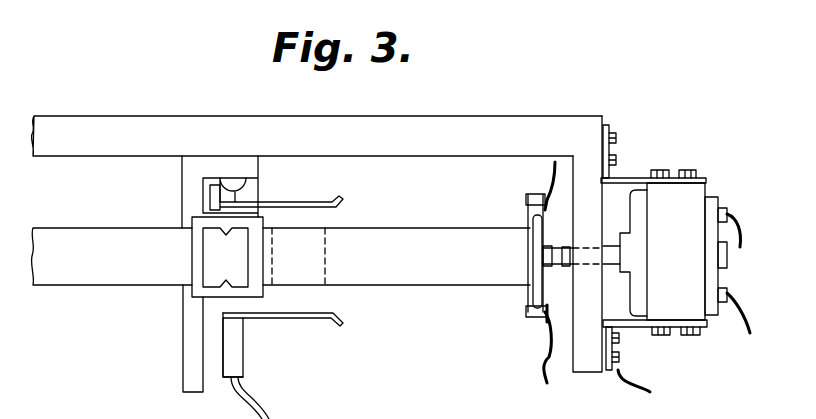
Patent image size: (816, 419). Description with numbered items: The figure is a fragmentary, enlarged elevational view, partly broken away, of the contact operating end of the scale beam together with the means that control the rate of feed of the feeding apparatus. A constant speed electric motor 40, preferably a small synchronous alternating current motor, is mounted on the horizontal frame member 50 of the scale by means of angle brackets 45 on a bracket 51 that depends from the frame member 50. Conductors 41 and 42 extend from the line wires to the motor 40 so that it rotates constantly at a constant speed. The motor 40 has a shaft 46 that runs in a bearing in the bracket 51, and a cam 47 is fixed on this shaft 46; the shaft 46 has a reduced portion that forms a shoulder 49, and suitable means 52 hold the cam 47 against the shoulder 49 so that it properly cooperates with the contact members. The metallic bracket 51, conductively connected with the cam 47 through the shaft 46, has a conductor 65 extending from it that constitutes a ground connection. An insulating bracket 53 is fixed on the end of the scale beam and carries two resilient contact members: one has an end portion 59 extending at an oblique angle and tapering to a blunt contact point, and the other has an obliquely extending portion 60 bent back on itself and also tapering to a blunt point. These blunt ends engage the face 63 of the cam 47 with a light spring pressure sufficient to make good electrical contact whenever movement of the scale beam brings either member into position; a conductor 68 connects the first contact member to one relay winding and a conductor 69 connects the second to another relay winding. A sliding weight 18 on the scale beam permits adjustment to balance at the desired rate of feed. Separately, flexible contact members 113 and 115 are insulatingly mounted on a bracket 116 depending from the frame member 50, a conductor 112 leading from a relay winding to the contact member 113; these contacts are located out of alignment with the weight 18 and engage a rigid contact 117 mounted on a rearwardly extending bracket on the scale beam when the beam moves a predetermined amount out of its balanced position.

The horizontal frame member 50 is at (465, 132).
The bracket 51 is at (582, 360).
The cam 47 is at (530, 287).
The bracket 116 is at (193, 362).
The flexible contact member 115 is at (297, 203).
The sliding weight 18 is at (218, 348).
The flexible contact member 113 is at (247, 320).
The rigid contact 117 is at (302, 278).
The conductor 112 is at (267, 398).
The holding means 52 is at (528, 250).
The end portion 59 is at (536, 196).
The insulating bracket 53 is at (530, 313).
The face of the cam 63 is at (543, 240).
The conductor 68 is at (548, 180).
The obliquely extending portion 60 is at (537, 322).
The conductor 69 is at (551, 378).
The shoulder 49 is at (546, 264).
The shaft 46 is at (610, 252).
The constant speed electric motor 40 is at (678, 218).
The angle brackets 45 is at (633, 177).
The conductor 41 is at (741, 236).
The conductor 42 is at (748, 312).
The conductor 65 is at (650, 378).